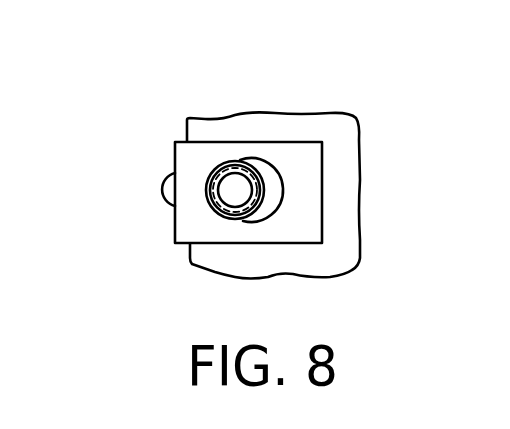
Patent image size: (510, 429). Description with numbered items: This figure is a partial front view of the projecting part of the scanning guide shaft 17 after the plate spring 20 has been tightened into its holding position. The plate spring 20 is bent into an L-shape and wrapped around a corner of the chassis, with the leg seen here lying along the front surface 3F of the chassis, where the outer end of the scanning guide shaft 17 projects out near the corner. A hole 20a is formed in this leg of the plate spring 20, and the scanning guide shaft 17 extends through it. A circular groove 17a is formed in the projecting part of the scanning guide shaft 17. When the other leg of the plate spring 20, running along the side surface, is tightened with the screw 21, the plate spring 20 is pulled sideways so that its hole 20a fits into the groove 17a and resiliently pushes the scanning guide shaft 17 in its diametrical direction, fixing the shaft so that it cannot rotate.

The front surface 3F is at (348, 252).
The plate spring 20 is at (283, 148).
The hole 20a is at (277, 186).
The screw 21 is at (166, 178).
The scanning guide shaft 17 is at (210, 205).
The circular groove 17a is at (258, 218).